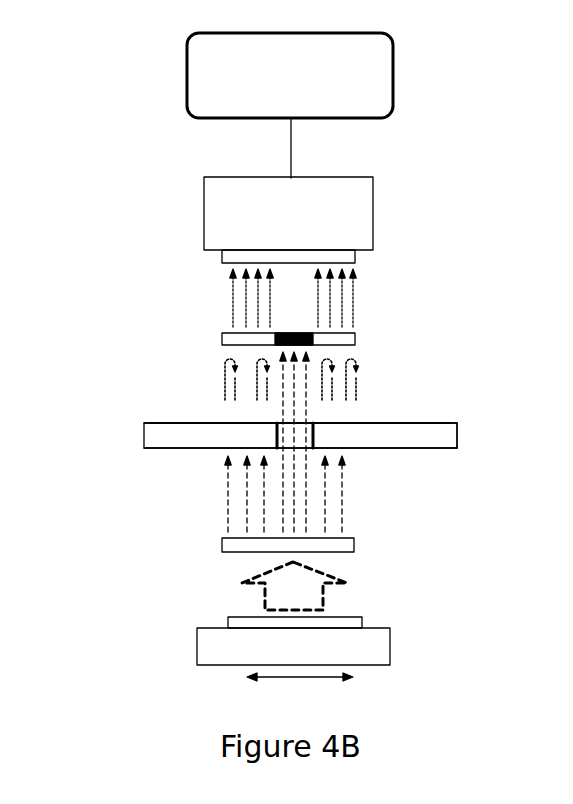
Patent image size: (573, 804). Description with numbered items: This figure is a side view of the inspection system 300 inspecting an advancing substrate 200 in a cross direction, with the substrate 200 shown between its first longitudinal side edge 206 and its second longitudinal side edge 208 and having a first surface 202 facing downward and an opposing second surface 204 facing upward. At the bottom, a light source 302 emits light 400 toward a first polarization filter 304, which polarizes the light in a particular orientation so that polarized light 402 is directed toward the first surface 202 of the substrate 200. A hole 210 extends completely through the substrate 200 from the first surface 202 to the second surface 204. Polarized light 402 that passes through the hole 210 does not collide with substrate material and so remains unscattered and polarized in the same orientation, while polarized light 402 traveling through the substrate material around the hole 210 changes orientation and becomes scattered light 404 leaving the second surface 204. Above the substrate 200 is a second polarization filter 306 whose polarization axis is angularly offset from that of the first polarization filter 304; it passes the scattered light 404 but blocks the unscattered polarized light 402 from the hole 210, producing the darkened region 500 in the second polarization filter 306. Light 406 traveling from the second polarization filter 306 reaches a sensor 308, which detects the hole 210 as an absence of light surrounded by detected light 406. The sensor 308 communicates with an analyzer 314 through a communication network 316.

The inspection system 300 is at (419, 128).
The analyzer 314 is at (383, 78).
The communication network 316 is at (291, 145).
The sensor 308 is at (347, 200).
The light traveling from the second polarization filter 406 is at (367, 292).
The second polarization filter 306 is at (222, 340).
The darkened region 500 is at (290, 333).
The scattered light 404 is at (367, 383).
The polarized light 402 is at (279, 410).
The second longitudinal side edge 208 is at (144, 430).
The substrate 200 is at (420, 423).
The second surface 204 is at (351, 409).
The first longitudinal side edge 206 is at (459, 432).
The first surface 202 is at (398, 450).
The hole 210 is at (287, 435).
The first polarization filter 304 is at (230, 543).
The light 400 is at (343, 595).
The light source 302 is at (377, 638).